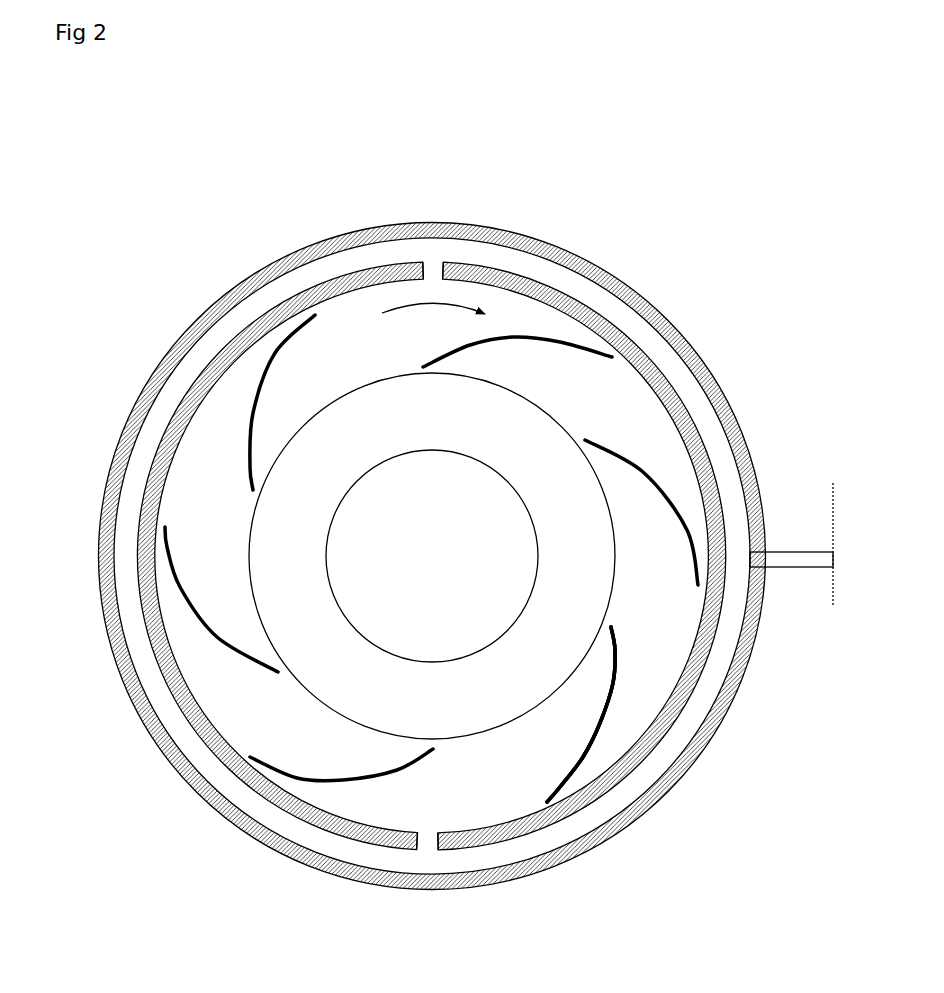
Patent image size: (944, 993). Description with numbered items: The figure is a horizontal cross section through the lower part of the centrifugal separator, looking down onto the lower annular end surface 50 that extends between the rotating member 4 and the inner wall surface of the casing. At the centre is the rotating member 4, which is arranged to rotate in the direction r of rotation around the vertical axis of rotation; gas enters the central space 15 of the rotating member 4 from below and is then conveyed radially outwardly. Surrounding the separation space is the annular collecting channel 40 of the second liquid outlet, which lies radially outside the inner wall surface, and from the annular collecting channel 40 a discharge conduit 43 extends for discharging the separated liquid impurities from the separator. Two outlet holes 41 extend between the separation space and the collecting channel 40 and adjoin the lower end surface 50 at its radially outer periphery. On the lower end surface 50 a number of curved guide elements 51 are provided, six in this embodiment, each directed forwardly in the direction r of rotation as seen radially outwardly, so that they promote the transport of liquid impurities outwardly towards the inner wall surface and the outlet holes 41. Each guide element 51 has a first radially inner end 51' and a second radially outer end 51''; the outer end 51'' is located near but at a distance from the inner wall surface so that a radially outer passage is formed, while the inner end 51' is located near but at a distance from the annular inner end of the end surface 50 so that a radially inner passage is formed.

The annular collecting channel 40 is at (337, 268).
The lower annular end surface 50 is at (603, 402).
The outlet hole 41 is at (438, 268).
The direction of rotation r is at (423, 305).
The rotating member 4 is at (255, 522).
The central space 15 is at (452, 567).
The guide element 51 is at (427, 556).
The first radially inner end 51' is at (683, 714).
The second radially outer end 51'' is at (581, 781).
The discharge conduit 43 is at (787, 552).